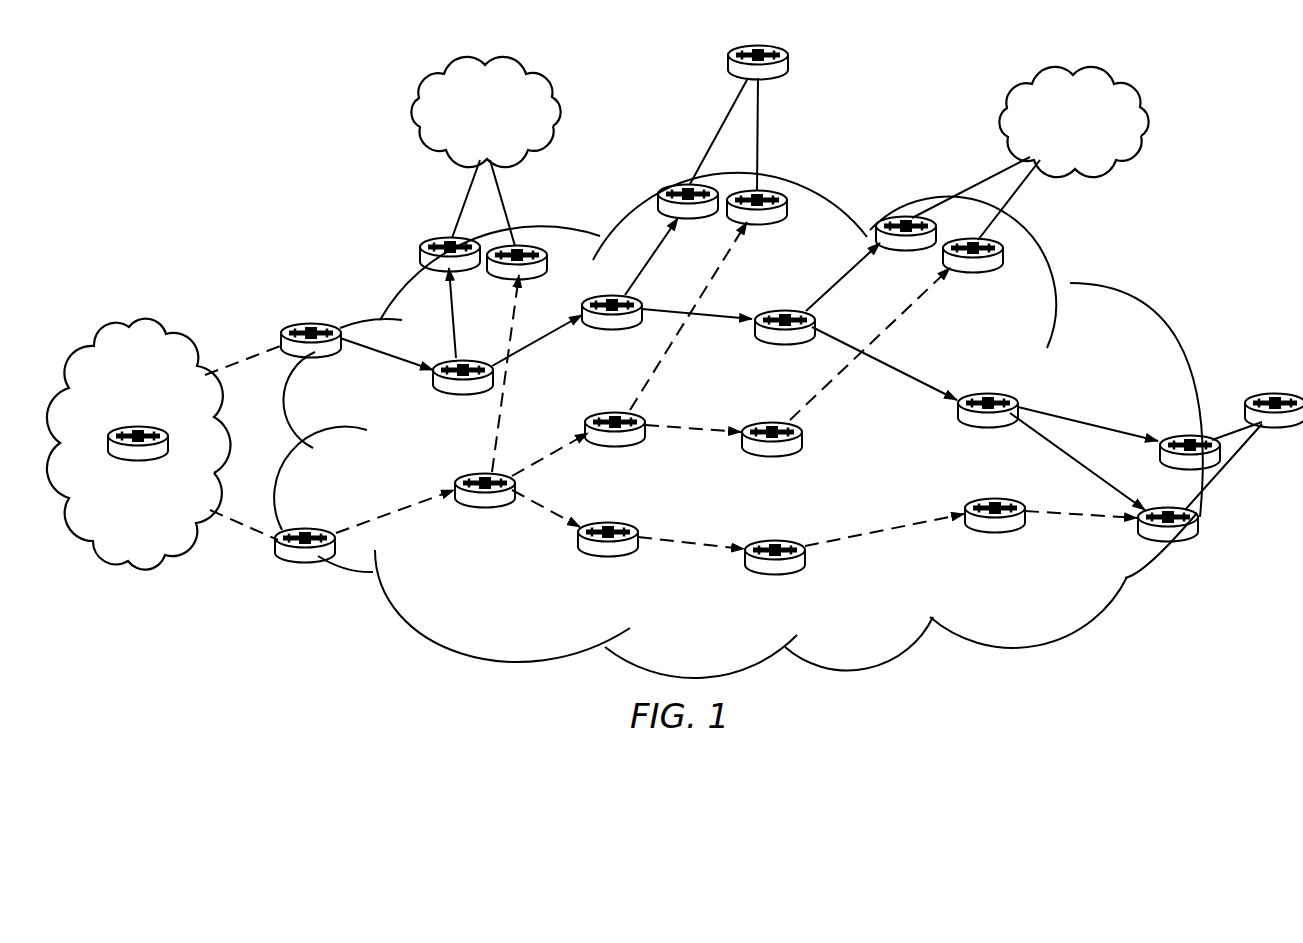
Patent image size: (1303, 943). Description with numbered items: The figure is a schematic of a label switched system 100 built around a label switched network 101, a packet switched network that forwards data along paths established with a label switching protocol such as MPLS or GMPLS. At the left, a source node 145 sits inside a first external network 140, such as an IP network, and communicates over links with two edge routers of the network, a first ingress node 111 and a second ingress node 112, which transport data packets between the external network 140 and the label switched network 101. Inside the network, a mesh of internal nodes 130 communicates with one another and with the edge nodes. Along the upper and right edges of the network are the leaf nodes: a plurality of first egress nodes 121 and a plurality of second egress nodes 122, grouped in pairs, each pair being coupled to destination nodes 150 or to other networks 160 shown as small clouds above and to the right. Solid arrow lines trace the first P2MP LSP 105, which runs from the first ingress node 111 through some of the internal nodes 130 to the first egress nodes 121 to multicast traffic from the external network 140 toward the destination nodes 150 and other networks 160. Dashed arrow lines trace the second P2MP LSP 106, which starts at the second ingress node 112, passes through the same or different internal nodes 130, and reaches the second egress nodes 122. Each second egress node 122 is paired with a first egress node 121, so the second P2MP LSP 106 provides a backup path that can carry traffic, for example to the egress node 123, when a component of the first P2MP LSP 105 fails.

The label switched system 100 is at (236, 140).
The label switched network 101 is at (1145, 290).
The first P2MP LSP 105 is at (448, 328).
The second P2MP LSP 106 is at (505, 418).
The first ingress node 111 is at (316, 350).
The second ingress node 112 is at (313, 528).
The first egress nodes 121 is at (435, 245).
The second egress nodes 122 is at (525, 240).
The egress node 123 is at (1150, 530).
The internal nodes 130 is at (455, 388).
The first external network 140 is at (188, 333).
The source node 145 is at (138, 452).
The destination nodes 150 is at (782, 68).
The other networks 160 is at (779, 151).